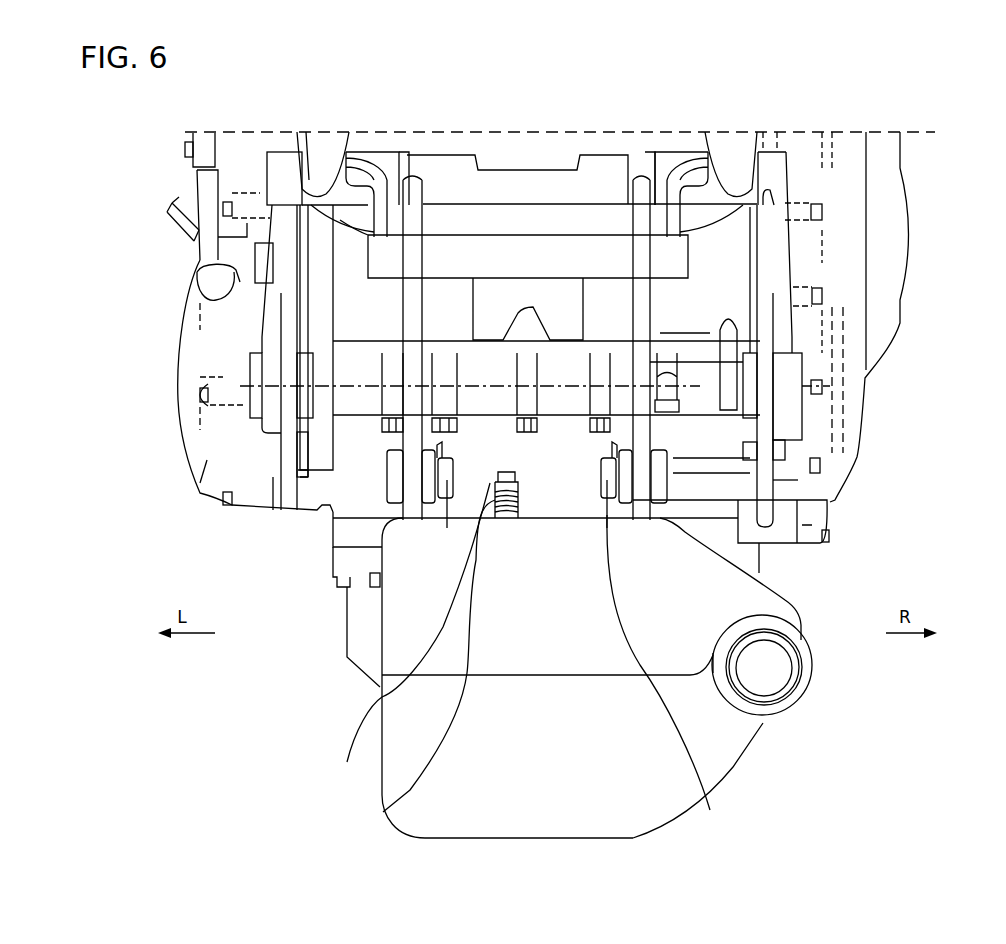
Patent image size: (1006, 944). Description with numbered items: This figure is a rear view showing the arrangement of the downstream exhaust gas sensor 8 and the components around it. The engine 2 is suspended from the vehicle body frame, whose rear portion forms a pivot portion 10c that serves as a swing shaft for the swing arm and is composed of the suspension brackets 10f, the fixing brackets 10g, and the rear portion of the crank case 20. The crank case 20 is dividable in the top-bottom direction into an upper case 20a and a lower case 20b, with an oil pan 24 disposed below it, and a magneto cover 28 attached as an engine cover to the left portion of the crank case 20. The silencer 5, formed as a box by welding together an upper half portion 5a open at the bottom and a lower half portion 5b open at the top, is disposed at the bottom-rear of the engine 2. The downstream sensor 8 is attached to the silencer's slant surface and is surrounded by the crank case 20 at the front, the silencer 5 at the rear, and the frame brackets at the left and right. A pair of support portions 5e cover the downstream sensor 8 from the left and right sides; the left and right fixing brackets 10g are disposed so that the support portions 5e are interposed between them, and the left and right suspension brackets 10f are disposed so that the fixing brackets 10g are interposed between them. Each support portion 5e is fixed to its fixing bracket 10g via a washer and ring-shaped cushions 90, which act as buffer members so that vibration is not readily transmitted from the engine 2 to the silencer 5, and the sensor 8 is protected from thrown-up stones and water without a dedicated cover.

The engine 2 is at (930, 165).
The silencer 5 is at (752, 782).
The upper half portion 5a is at (793, 613).
The lower half portion 5b is at (745, 737).
The support portions 5e is at (525, 657).
The downstream sensor 8 is at (383, 805).
The pivot portion 10c is at (808, 411).
The suspension brackets 10f is at (282, 452).
The fixing brackets 10g is at (410, 508).
The crank case 20 is at (538, 140).
The upper case 20a is at (317, 220).
The lower case 20b is at (333, 511).
The oil pan 24 is at (350, 640).
The magneto cover 28 is at (186, 360).
The cushions 90 is at (425, 447).